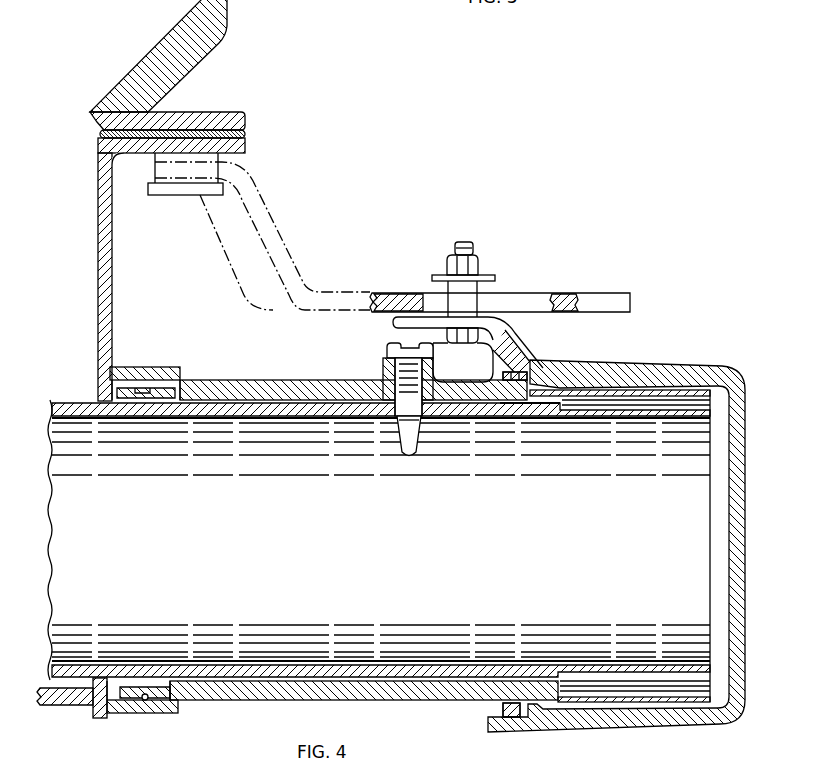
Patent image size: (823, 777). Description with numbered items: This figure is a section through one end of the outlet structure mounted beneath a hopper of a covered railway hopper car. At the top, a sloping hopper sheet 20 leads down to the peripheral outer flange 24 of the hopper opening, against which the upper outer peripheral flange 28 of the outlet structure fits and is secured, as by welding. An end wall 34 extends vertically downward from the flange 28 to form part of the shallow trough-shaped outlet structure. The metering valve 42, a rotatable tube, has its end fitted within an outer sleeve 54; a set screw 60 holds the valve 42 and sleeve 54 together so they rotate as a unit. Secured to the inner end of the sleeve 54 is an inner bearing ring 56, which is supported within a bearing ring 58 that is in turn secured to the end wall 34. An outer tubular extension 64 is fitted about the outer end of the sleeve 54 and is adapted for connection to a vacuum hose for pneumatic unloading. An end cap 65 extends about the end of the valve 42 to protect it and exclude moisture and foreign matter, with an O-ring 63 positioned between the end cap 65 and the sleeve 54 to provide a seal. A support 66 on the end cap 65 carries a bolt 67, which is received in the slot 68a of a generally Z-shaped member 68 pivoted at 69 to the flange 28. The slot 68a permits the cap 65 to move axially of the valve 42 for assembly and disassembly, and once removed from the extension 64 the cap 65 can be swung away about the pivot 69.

The hopper sheet 20 is at (168, 33).
The peripheral outer flange 24 is at (222, 112).
The upper outer peripheral flange 28 is at (246, 145).
The end wall 34 is at (112, 290).
The pivot 69 is at (190, 196).
The Z-shaped member 68 is at (352, 292).
The slot 68a is at (547, 293).
The bolt 67 is at (474, 243).
The support 66 is at (392, 324).
The O-ring 63 is at (519, 372).
The bearing ring 58 is at (157, 367).
The outer sleeve 54 is at (270, 380).
The inner bearing ring 56 is at (143, 398).
The metering valve 42 is at (238, 417).
The set screw 60 is at (409, 456).
The outer tubular extension 64 is at (640, 396).
The end cap 65 is at (745, 548).